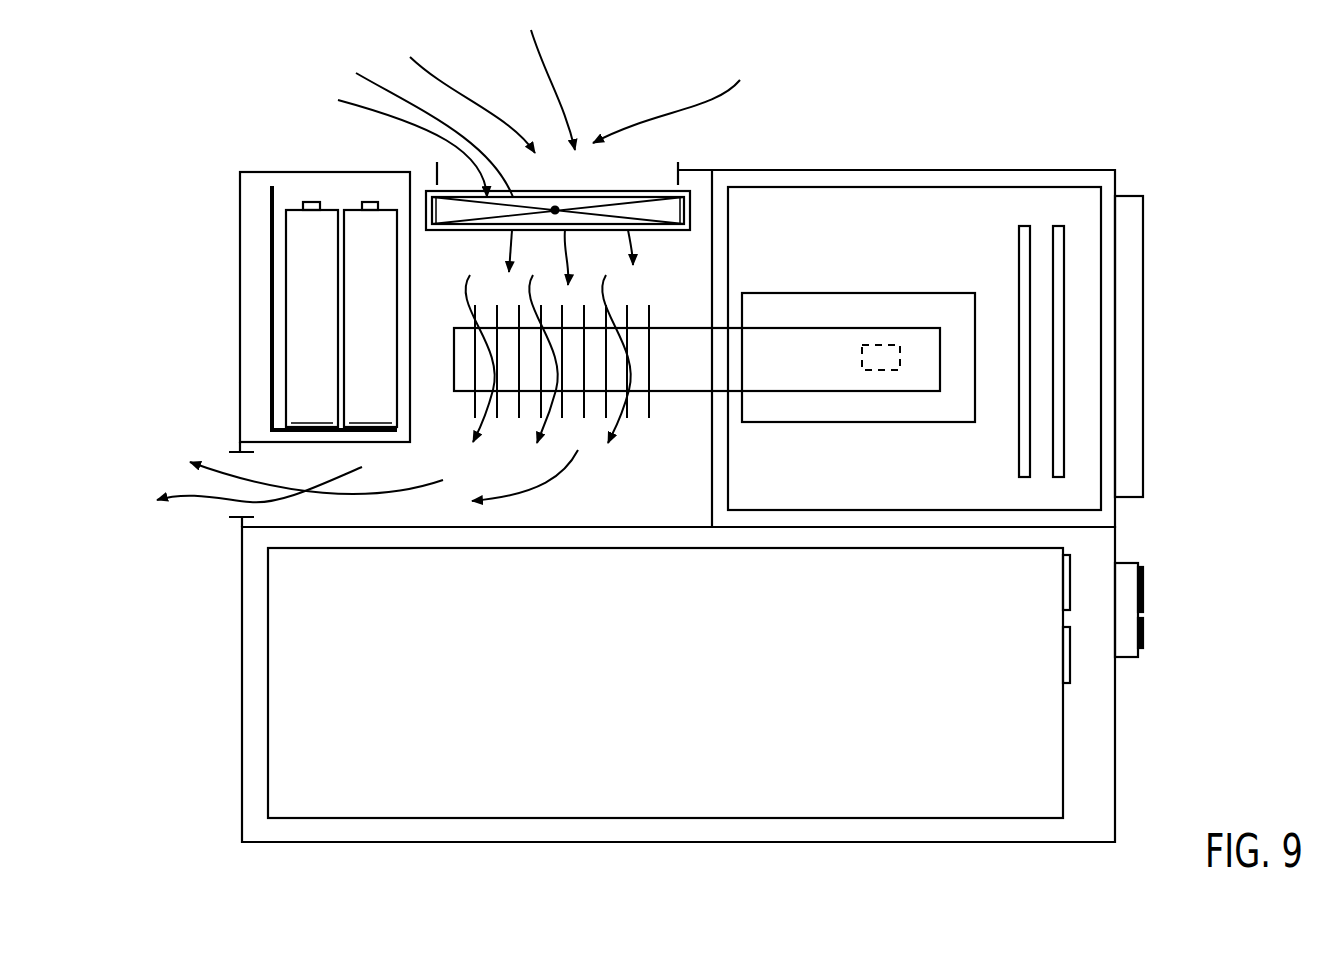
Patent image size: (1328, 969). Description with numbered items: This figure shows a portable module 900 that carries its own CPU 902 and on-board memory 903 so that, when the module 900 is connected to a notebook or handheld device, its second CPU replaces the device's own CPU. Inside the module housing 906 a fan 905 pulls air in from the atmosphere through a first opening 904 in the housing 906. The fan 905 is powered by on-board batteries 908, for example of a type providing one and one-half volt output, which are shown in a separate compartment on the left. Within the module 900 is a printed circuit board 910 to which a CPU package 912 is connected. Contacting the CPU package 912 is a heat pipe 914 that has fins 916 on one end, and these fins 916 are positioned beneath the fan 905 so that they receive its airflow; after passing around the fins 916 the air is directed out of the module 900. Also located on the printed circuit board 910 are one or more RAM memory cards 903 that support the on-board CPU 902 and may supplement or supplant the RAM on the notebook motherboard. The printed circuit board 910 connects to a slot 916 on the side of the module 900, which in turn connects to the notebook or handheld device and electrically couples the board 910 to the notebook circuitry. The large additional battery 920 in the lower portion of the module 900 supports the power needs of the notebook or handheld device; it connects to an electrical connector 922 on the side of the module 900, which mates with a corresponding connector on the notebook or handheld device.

The portable module 900 is at (1107, 837).
The CPU 902 is at (880, 345).
The RAM memory cards 903 is at (1021, 222).
The first opening 904 is at (678, 162).
The fan 905 is at (690, 208).
The module housing 906 is at (1002, 170).
The on-board batteries 908 is at (313, 192).
The printed circuit board 910 is at (948, 202).
The CPU package 912 is at (793, 293).
The heat pipe 914 is at (825, 327).
The fins 916 is at (468, 402).
The additional battery 920 is at (830, 820).
The electrical connector 922 is at (1125, 658).